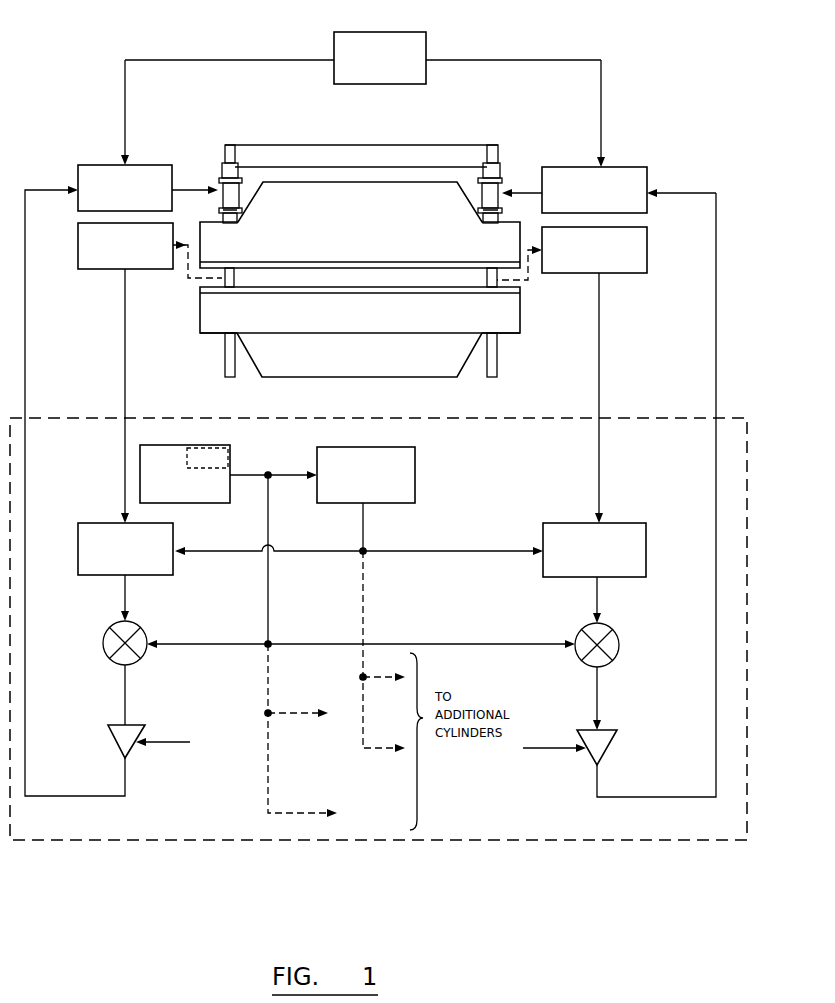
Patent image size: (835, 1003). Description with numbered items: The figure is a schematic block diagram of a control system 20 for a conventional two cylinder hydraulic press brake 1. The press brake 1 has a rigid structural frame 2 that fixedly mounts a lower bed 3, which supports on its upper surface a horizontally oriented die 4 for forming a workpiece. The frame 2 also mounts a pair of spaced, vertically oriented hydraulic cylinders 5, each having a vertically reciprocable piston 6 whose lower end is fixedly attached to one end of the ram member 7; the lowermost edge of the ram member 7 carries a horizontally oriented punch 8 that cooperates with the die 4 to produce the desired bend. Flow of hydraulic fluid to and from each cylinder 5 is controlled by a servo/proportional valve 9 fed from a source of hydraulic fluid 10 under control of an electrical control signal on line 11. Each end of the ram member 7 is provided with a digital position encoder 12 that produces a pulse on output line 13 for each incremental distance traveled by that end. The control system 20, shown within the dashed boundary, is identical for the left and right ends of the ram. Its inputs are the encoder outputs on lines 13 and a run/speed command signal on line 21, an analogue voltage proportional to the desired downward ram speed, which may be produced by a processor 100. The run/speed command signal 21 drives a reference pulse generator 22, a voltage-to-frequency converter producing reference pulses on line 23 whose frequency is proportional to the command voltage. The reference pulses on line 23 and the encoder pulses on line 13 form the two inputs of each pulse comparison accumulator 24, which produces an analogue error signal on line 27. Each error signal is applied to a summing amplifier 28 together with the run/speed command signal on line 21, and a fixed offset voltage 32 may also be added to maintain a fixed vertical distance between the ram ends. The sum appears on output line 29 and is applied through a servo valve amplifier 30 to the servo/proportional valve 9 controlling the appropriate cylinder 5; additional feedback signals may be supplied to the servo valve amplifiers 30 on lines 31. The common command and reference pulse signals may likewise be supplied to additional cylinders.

The press brake 1 is at (211, 128).
The structural frame 2 is at (493, 147).
The lower bed 3 is at (513, 328).
The die 4 is at (520, 288).
The hydraulic cylinder 5 is at (226, 190).
The piston 6 is at (227, 220).
The ram member 7 is at (397, 241).
The punch 8 is at (312, 268).
The servo/proportional valve 9 is at (155, 165).
The source of hydraulic fluid 10 is at (334, 52).
The control signal line 11 is at (50, 188).
The digital position encoder 12 is at (85, 268).
The position encoder output line 13 is at (125, 372).
The control system 20 is at (626, 852).
The run/speed command signal line 21 is at (294, 477).
The reference pulse generator 22 is at (414, 472).
The reference pulse line 23 is at (303, 553).
The pulse comparison accumulator 24 is at (97, 523).
The error signal line 27 is at (130, 595).
The summing amplifier 28 is at (103, 643).
The summing amplifier output line 29 is at (126, 695).
The servo valve amplifier 30 is at (120, 749).
The feedback signal line 31 is at (165, 742).
The fixed offset voltage 32 is at (152, 621).
The processor 100 is at (153, 445).